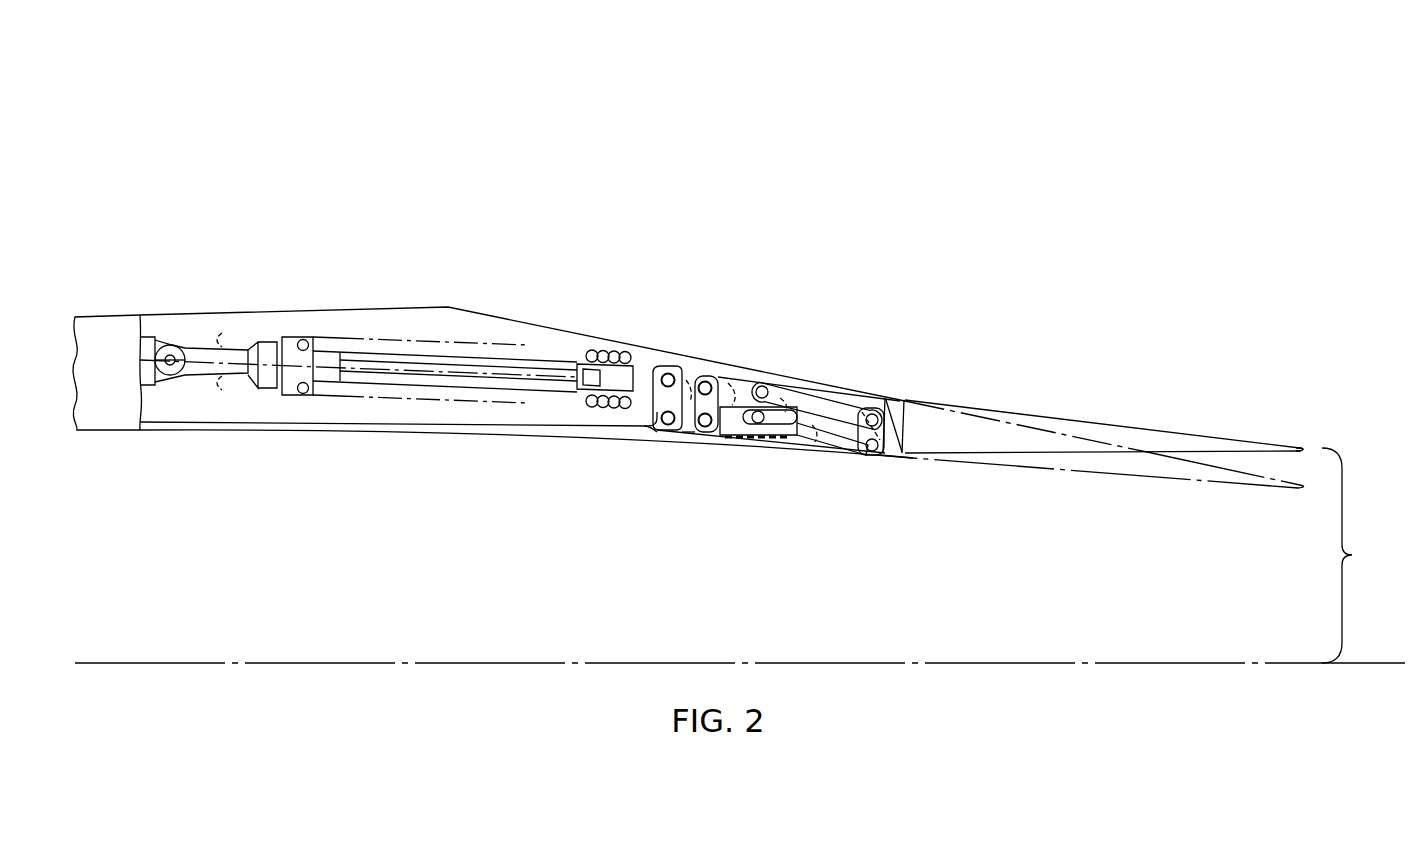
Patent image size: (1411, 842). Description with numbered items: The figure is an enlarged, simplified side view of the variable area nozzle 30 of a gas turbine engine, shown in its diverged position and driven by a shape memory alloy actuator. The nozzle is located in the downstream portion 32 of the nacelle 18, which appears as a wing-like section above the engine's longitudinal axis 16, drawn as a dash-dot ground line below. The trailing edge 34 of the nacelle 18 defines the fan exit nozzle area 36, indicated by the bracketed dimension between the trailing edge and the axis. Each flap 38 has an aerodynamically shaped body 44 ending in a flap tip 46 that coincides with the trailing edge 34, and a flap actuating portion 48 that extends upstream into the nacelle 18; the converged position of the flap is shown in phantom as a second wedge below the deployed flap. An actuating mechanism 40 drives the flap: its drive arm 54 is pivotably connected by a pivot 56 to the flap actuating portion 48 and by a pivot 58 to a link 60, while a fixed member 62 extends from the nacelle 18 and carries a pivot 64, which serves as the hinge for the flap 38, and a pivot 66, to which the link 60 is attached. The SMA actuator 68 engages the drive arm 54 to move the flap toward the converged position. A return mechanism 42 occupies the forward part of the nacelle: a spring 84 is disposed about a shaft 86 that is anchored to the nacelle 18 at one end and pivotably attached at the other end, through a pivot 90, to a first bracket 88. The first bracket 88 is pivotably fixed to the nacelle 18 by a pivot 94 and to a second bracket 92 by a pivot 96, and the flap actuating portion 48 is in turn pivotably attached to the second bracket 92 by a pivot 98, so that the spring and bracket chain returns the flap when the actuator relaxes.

The longitudinal axis 16 is at (978, 660).
The nacelle 18 is at (110, 322).
The variable area nozzle 30 is at (930, 318).
The downstream portion 32 is at (382, 296).
The trailing edge 34 is at (1303, 446).
The fan exit nozzle area 36 is at (1360, 555).
The flap 38 is at (1050, 412).
The actuating mechanism 40 is at (795, 364).
The return mechanism 42 is at (470, 326).
The aerodynamically shaped body 44 is at (978, 447).
The flap tip 46 is at (1305, 449).
The flap actuating portion 48 is at (866, 398).
The drive arm 54 is at (757, 448).
The pivot 56 is at (770, 380).
The pivot 58 is at (775, 408).
The link 60 is at (828, 448).
The fixed member 62 is at (845, 447).
The pivot 64 is at (927, 458).
The pivot 66 is at (875, 450).
The SMA actuator 68 is at (746, 458).
The spring 84 is at (590, 348).
The shaft 86 is at (533, 375).
The first bracket 88 is at (682, 443).
The pivot 90 is at (675, 366).
The second bracket 92 is at (690, 435).
The pivot 94 is at (652, 445).
The pivot 96 is at (710, 447).
The pivot 98 is at (718, 383).